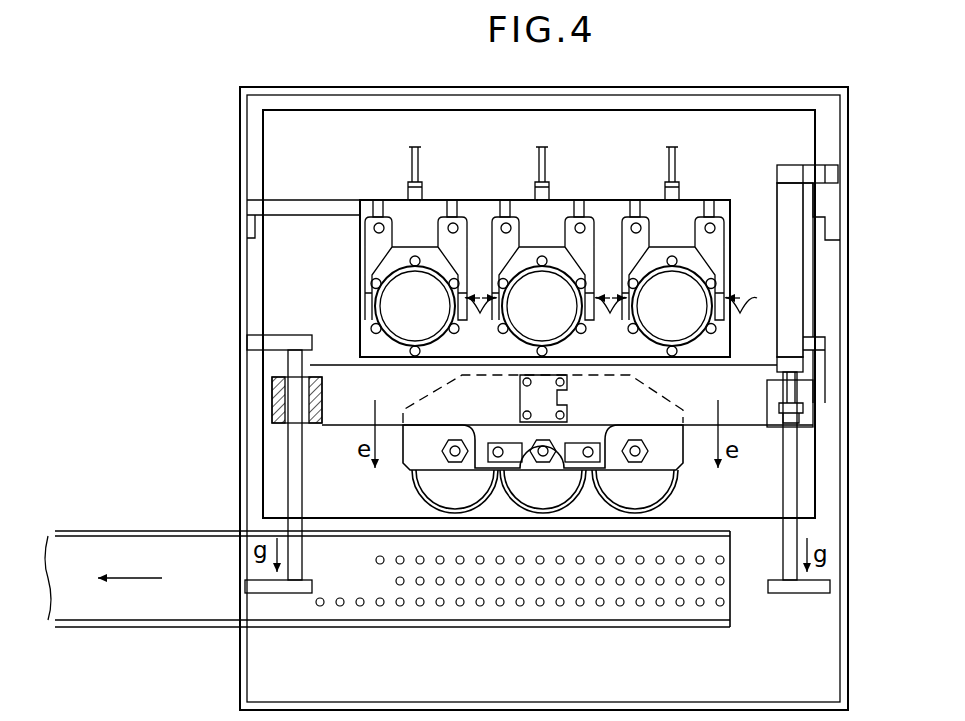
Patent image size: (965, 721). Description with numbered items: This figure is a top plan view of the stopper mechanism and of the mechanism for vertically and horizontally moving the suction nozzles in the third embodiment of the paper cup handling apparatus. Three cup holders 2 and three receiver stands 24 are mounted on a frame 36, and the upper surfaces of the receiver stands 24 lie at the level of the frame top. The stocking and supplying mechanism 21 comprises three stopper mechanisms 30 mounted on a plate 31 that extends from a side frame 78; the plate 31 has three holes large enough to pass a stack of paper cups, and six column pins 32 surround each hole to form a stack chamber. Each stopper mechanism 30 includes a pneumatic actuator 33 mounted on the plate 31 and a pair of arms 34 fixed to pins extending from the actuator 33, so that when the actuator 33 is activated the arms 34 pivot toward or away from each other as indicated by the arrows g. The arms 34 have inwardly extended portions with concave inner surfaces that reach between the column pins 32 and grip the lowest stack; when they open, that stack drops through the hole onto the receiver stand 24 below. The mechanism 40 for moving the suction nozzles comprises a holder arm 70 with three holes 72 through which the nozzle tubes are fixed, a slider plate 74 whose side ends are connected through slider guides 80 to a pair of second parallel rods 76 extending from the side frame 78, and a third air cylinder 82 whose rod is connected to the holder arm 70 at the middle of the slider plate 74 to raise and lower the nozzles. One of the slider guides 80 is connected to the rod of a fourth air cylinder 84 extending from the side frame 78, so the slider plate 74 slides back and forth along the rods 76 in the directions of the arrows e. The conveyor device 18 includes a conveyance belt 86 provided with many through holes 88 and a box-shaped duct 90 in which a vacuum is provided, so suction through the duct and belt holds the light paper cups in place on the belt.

The cup holder 2 is at (435, 483).
The conveyor device 18 is at (155, 632).
The stocking and supplying mechanism 21 is at (855, 290).
The receiver stand 24 is at (535, 328).
The stopper mechanism 30 is at (534, 277).
The plate 31 is at (365, 345).
The column pins 32 is at (362, 292).
The actuator 33 is at (400, 205).
The arms 34 is at (365, 252).
The frame 36 is at (783, 128).
The mechanism for vertically and horizontally moving the suction nozzle 40 is at (866, 370).
The holder arm 70 is at (672, 455).
The holes 72 is at (540, 458).
The slider plate 74 is at (335, 418).
The second parallel rods 76 is at (290, 448).
The side frame 78 is at (848, 134).
The slider guides 80 is at (275, 405).
The third air cylinder 82 is at (567, 402).
The fourth air cylinder 84 is at (795, 268).
The conveyance belt 86 is at (85, 540).
The through holes 88 is at (360, 607).
The duct 90 is at (160, 531).